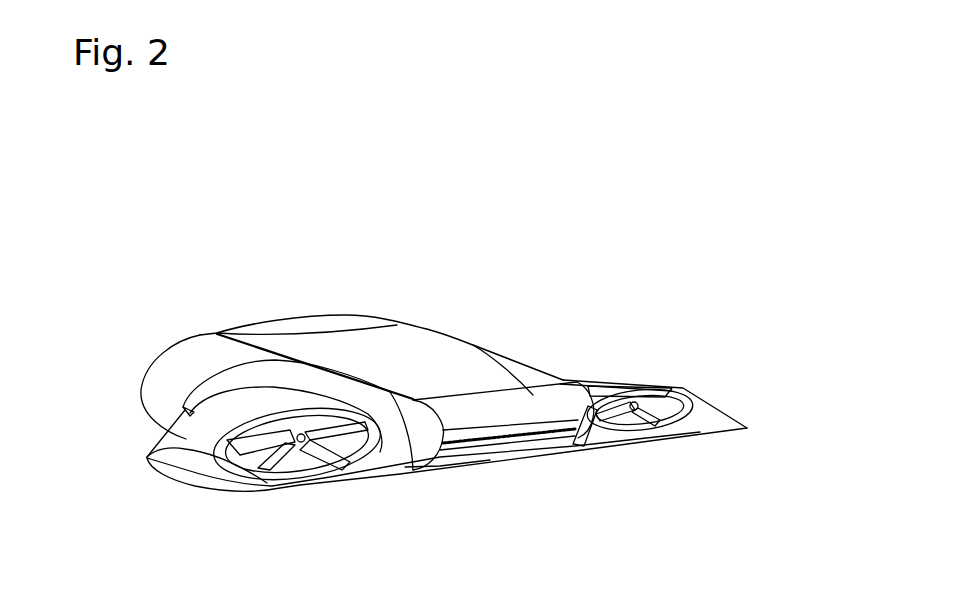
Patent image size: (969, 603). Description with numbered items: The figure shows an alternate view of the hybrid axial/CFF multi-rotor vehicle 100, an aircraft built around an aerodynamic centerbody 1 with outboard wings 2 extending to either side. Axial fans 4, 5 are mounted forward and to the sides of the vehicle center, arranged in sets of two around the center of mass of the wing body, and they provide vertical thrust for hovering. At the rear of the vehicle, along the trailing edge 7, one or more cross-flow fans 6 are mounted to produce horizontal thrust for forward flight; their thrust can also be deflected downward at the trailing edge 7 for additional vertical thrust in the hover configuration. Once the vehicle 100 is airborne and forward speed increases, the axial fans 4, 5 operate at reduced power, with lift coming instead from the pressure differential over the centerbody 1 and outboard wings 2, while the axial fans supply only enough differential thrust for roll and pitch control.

The hybrid axial/CFF multi-rotor vehicle 100 is at (623, 242).
The aerodynamic centerbody 1 is at (183, 367).
The outboard wings 2 is at (173, 473).
The axial fan 4 is at (633, 407).
The axial fan 5 is at (270, 443).
The cross-flow fan 6 is at (479, 455).
The trailing edge 7 is at (520, 432).